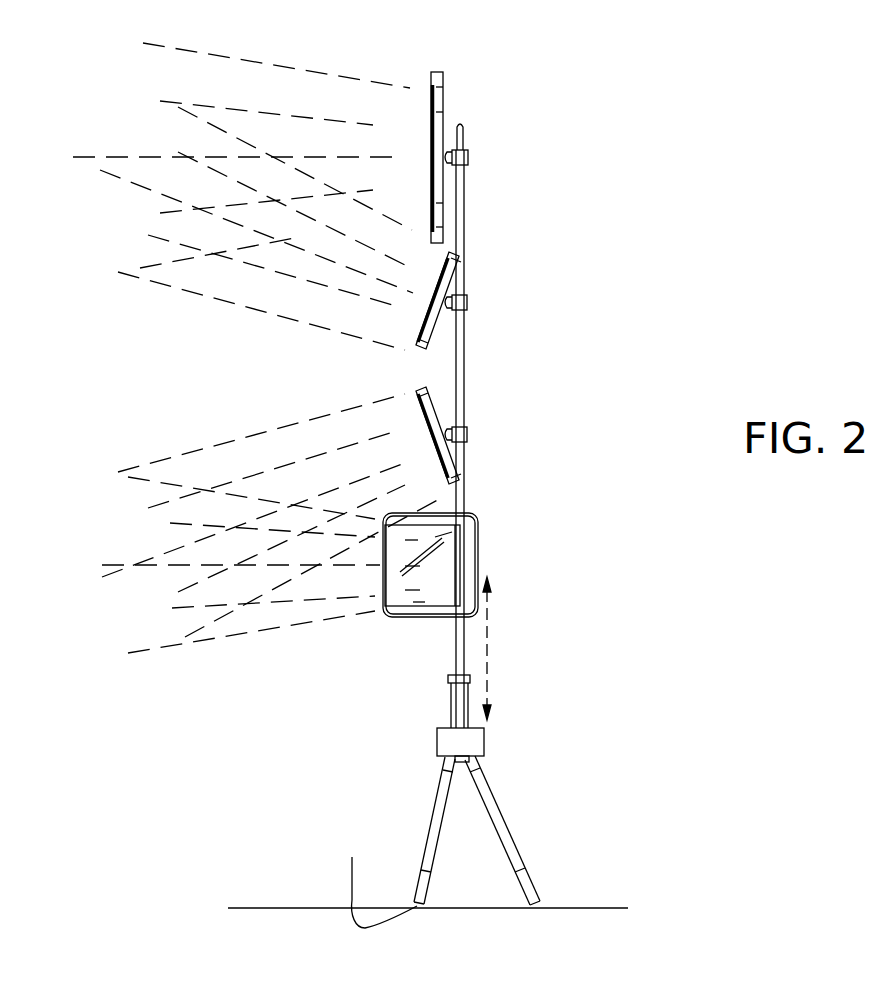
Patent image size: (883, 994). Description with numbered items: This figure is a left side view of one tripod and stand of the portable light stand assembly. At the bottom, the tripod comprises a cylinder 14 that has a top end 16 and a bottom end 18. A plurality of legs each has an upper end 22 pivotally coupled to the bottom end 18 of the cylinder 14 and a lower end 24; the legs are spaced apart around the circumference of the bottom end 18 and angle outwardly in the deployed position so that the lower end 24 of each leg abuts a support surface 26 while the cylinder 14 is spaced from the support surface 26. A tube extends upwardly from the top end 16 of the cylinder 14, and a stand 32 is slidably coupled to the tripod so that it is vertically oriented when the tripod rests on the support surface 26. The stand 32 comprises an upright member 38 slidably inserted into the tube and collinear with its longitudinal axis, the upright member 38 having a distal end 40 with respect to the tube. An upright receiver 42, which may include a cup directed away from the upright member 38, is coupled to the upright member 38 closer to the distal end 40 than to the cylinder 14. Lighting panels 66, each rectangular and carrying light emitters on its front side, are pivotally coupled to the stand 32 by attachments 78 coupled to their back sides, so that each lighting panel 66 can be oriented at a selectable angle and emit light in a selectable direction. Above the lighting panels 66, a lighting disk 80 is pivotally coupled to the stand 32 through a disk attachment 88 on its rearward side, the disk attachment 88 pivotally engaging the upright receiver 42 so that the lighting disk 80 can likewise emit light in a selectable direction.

The cylinder 14 is at (437, 745).
The top end 16 is at (438, 728).
The bottom end 18 is at (478, 772).
The upper end 22 is at (455, 752).
The lower end 24 is at (374, 874).
The support surface 26 is at (268, 908).
The stand 32 is at (488, 357).
The upright member 38 is at (470, 235).
The distal end 40 is at (459, 123).
The upright receiver 42 is at (470, 158).
The lighting panel 66 is at (420, 343).
The attachment 78 is at (470, 281).
The lighting disk 80 is at (431, 87).
The disk attachment 88 is at (470, 134).